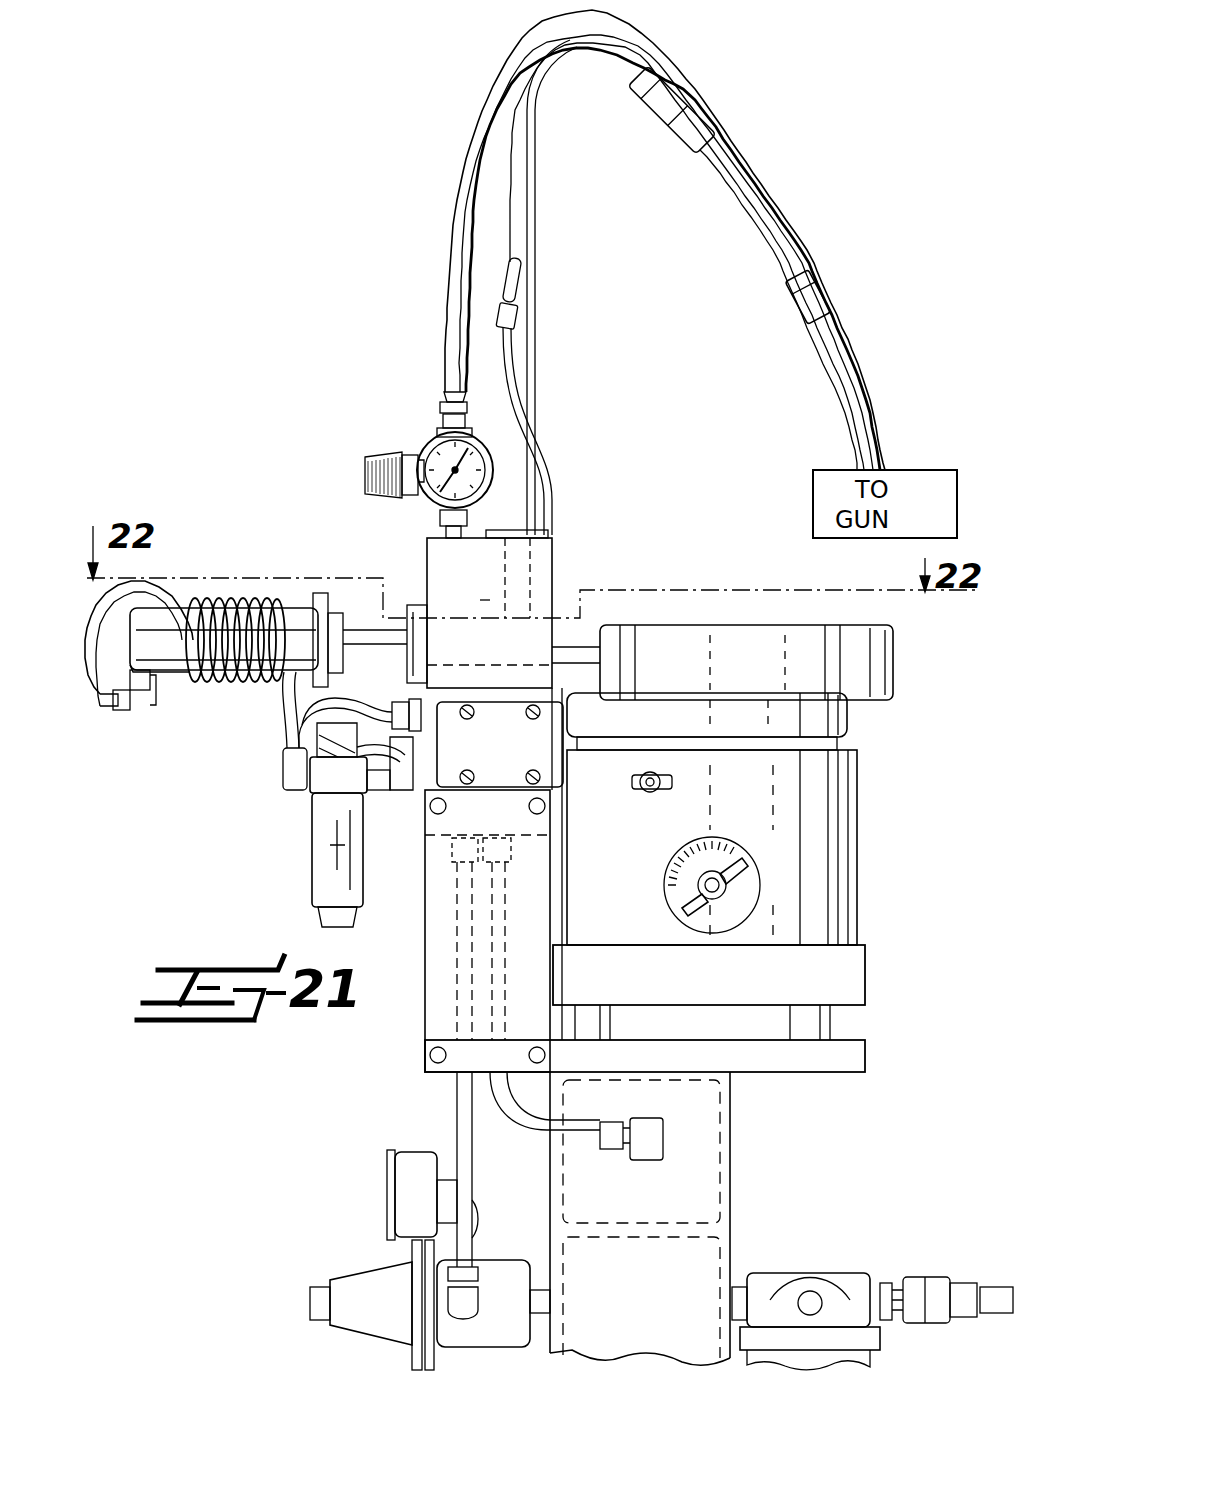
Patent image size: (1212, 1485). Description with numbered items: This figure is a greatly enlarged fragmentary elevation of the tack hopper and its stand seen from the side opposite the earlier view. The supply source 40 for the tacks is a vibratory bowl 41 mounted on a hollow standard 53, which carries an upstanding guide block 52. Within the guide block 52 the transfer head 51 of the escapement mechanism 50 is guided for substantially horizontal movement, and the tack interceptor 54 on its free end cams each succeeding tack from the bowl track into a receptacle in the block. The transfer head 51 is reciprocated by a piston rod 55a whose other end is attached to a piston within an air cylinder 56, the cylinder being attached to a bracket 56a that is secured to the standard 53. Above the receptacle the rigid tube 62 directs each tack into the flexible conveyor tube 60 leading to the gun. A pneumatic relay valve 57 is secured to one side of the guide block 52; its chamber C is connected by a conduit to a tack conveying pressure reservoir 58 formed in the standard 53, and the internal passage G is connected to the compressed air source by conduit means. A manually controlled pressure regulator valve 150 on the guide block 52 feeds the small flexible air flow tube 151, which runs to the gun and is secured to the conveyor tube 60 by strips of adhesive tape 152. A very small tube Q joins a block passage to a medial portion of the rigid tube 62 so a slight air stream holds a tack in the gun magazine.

The supply source 40 is at (746, 584).
The vibratory bowl 41 is at (838, 818).
The escapement mechanism 50 is at (560, 565).
The transfer head 51 is at (484, 626).
The guide block 52 is at (554, 590).
The standard 53 is at (735, 1230).
The tack interceptor 54 is at (580, 640).
The piston rod 55a is at (368, 640).
The air cylinder 56 is at (195, 605).
The bracket 56a is at (305, 678).
The pneumatic relay valve 57 is at (516, 765).
The tack conveying pressure reservoir 58 is at (690, 1172).
The flexible conveyor tube 60 is at (790, 230).
The rigid tube 62 is at (536, 396).
The pressure regulator valve 150 is at (433, 440).
The air flow tube 151 is at (445, 352).
The strips of adhesive tape 152 is at (702, 124).
The passageway G is at (465, 1110).
The air flow tube Q is at (540, 456).
The valve chamber C is at (537, 1130).